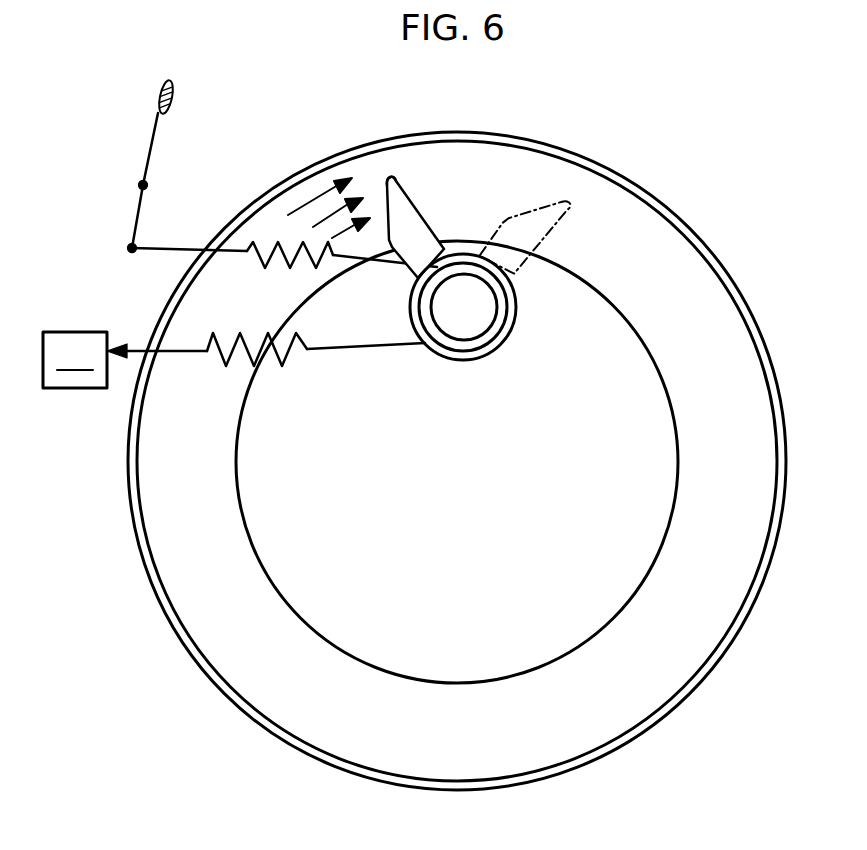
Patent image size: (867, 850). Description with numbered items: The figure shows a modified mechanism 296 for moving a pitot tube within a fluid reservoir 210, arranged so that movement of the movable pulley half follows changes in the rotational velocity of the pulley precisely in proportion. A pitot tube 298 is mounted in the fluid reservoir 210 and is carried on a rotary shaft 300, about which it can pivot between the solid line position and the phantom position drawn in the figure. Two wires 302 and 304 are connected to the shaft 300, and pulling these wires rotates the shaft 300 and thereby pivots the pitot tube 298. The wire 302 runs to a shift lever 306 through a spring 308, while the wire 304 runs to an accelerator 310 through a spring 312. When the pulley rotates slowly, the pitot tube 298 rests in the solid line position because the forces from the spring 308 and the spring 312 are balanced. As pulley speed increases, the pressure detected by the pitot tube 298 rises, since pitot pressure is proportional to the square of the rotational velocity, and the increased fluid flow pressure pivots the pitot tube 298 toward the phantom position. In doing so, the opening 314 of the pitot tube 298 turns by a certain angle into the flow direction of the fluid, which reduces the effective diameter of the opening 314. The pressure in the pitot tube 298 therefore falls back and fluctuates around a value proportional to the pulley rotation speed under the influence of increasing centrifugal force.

The modified mechanism 296 is at (770, 209).
The fluid reservoir 210 is at (736, 430).
The pitot tube 298 is at (414, 208).
The opening 314 is at (387, 183).
The rotary shaft 300 is at (477, 320).
The wire 302 is at (157, 250).
The wire 304 is at (173, 353).
The shift lever 306 is at (156, 141).
The spring 308 is at (253, 260).
The accelerator 310 is at (75, 360).
The spring 312 is at (300, 358).